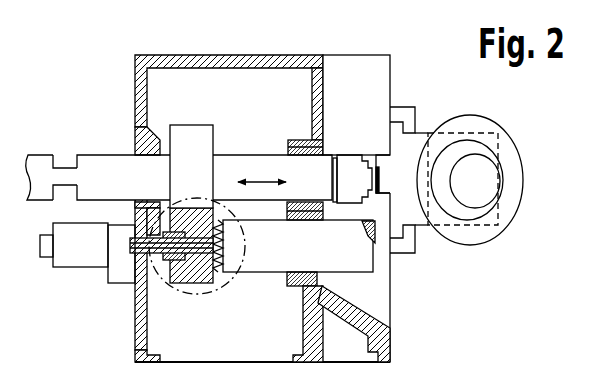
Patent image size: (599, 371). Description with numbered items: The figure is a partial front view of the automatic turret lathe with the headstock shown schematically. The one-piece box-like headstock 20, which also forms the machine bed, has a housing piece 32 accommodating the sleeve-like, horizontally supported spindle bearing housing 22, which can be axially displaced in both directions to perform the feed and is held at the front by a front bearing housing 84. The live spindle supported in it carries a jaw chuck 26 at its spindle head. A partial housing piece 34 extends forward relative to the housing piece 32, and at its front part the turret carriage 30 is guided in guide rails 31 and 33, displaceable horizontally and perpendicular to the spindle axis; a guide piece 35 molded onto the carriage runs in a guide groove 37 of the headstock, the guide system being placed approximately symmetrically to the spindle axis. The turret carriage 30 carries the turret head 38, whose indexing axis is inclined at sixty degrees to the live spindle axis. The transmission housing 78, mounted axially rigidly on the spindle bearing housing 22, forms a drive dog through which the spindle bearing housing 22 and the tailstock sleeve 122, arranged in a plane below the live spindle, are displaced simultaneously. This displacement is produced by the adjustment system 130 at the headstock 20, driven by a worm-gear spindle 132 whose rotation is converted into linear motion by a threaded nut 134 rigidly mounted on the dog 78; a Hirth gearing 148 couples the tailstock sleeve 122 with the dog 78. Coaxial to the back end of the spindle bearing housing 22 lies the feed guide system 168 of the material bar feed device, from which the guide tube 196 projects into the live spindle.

The headstock 20 is at (266, 52).
The spindle bearing housing 22 is at (238, 149).
The chuck 26 is at (363, 148).
The turret carriage 30 is at (427, 129).
The guide rail 31 is at (403, 111).
The housing piece 32 is at (310, 110).
The guide rail 33 is at (404, 254).
The partial housing piece 34 is at (378, 63).
The guide piece 35 is at (383, 174).
The guide groove 37 is at (387, 191).
The turret head 38 is at (529, 149).
The transmission housing 78 is at (185, 133).
The front bearing housing 84 is at (323, 146).
The tailstock sleeve 122 is at (357, 283).
The adjustment system 130 is at (73, 277).
The worm-gear spindle 132 is at (190, 278).
The threaded nut 134 is at (151, 268).
The Hirth gearing 148 is at (235, 276).
The feed guide system 168 is at (41, 145).
The guide tube 196 is at (65, 172).